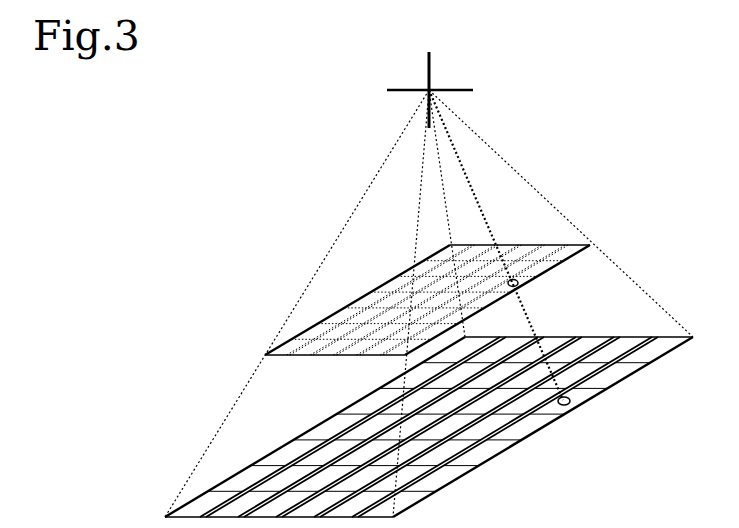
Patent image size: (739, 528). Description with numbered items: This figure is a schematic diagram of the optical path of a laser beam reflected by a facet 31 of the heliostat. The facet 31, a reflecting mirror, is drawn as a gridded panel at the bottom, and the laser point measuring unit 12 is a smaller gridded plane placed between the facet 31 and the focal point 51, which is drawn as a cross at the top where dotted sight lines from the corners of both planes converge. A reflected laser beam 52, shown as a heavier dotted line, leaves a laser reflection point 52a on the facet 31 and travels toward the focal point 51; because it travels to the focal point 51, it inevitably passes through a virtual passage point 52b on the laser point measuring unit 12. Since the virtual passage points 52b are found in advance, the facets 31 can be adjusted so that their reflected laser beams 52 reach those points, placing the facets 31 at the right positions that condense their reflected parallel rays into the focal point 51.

The laser point measuring unit 12 is at (340, 315).
The facet 31 is at (247, 477).
The focal point 51 is at (430, 88).
The reflected laser beam 52 is at (463, 168).
The laser reflection point 52a is at (572, 402).
The virtual passage point 52b is at (520, 284).